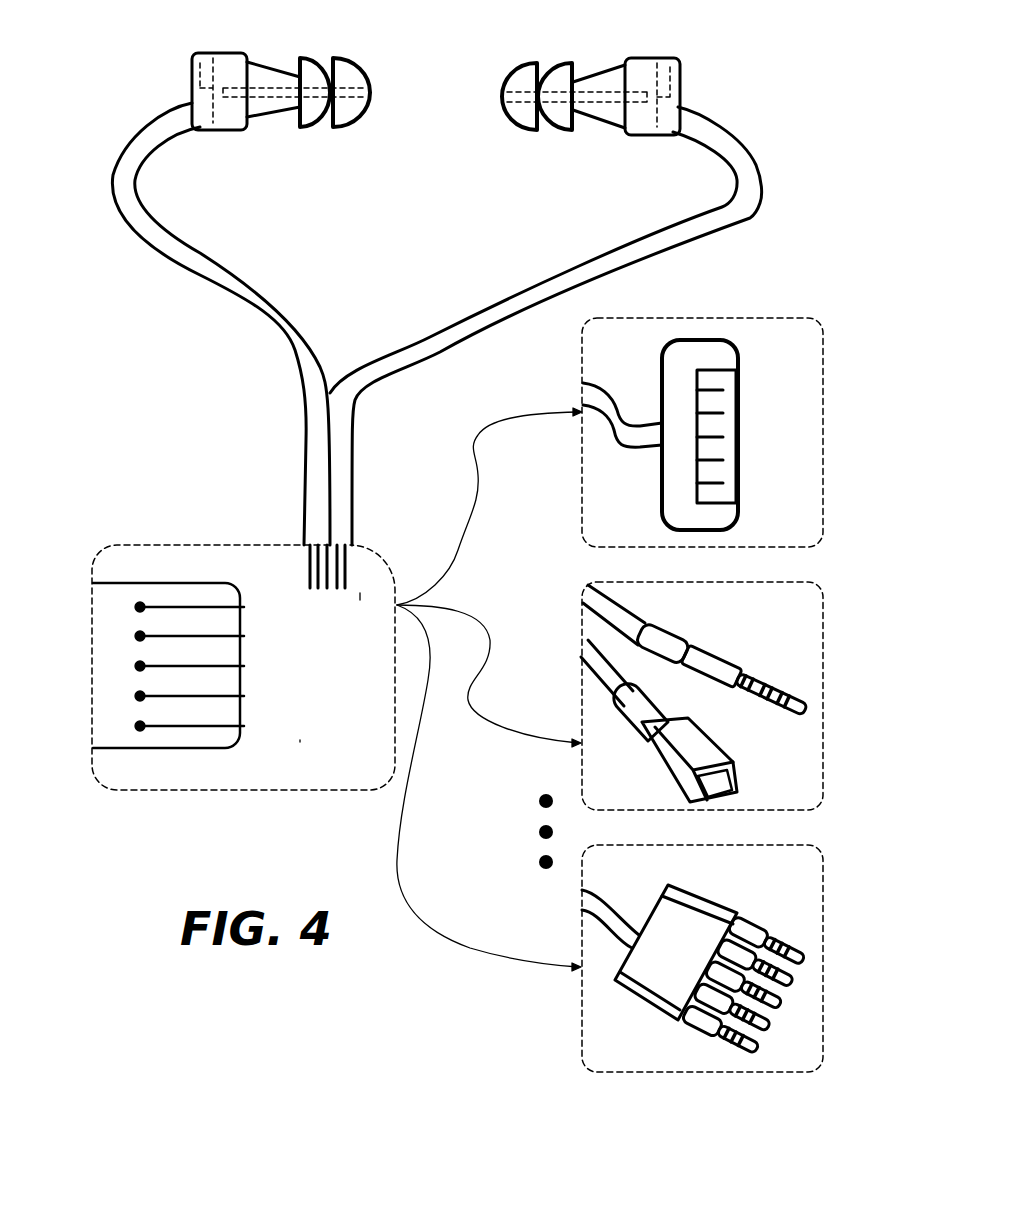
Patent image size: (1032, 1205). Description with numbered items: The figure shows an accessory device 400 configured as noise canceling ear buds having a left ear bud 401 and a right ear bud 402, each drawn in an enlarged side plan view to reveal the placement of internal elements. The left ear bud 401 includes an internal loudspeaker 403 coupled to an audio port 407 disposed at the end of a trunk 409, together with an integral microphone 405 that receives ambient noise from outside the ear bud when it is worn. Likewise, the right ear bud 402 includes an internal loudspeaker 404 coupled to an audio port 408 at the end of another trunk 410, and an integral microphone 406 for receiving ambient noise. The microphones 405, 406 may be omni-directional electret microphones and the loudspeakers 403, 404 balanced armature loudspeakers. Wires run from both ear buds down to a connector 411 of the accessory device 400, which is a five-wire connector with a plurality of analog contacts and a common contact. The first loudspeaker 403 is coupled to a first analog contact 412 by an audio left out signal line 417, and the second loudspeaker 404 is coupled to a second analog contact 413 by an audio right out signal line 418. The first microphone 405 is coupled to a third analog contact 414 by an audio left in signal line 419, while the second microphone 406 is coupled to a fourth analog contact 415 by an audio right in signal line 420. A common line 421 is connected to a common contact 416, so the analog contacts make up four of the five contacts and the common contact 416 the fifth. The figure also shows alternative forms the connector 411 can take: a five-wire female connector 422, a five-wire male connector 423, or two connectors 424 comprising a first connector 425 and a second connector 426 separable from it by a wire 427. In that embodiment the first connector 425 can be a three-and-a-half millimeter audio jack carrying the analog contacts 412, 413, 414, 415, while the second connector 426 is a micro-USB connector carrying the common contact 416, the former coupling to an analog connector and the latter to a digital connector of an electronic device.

The accessory device 400 is at (815, 143).
The left ear bud 401 is at (292, 148).
The right ear bud 402 is at (525, 142).
The loudspeaker 403 is at (228, 85).
The loudspeaker 404 is at (638, 97).
The microphone 405 is at (197, 78).
The microphone 406 is at (677, 82).
The audio port 407 is at (380, 92).
The audio port 408 is at (492, 97).
The trunk 409 is at (310, 88).
The trunk 410 is at (553, 92).
The connector 411 is at (177, 547).
The first analog contact 412 is at (138, 696).
The second analog contact 413 is at (138, 666).
The third analog contact 414 is at (138, 636).
The fourth analog contact 415 is at (138, 607).
The common contact 416 is at (138, 726).
The audio left out signal line 417 is at (328, 707).
The audio right out signal line 418 is at (390, 665).
The audio left in signal line 419 is at (360, 636).
The audio right in signal line 420 is at (360, 593).
The common line 421 is at (300, 740).
The five-wire female connector 422 is at (823, 388).
The five-wire male connector 423 is at (823, 918).
The two connectors 424 is at (732, 689).
The first connector 425 is at (717, 665).
The second connector 426 is at (700, 752).
The wire 427 is at (617, 618).